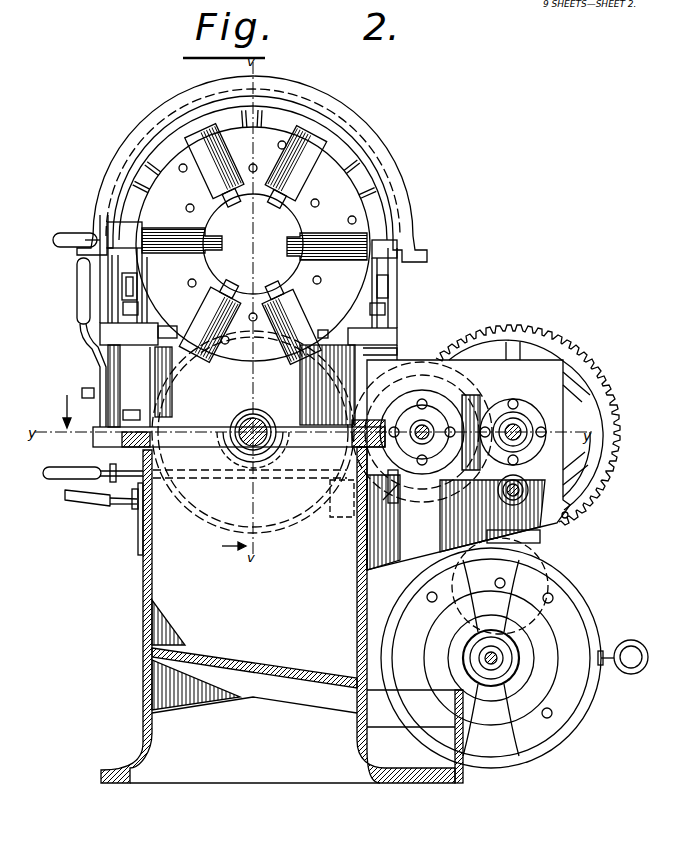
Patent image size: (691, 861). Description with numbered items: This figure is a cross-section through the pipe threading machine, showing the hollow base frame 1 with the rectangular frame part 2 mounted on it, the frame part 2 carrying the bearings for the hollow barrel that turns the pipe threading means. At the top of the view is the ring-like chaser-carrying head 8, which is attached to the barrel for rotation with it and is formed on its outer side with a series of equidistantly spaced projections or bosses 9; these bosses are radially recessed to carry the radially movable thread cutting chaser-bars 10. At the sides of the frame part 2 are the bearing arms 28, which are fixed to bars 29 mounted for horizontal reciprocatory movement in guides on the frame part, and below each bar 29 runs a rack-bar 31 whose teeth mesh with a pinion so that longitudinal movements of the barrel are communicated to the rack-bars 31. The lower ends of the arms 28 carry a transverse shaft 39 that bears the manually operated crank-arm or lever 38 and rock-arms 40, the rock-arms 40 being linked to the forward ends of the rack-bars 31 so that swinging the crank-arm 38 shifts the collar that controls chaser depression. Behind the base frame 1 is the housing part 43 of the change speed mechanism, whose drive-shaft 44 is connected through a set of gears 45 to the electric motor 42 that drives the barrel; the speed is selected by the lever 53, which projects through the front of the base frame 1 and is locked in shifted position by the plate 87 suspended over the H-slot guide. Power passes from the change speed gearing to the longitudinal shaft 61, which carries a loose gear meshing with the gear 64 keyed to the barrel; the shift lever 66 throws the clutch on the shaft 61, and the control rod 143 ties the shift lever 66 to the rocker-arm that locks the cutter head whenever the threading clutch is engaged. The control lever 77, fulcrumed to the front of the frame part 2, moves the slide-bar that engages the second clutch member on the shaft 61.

The hollow base frame 1 is at (143, 607).
The rectangular frame part 2 is at (153, 384).
The ring-like chaser-carrying head 8 is at (253, 244).
The projections or bosses 9 is at (334, 280).
The thread cutting chaser-bars 10 is at (287, 246).
The bearing arms 28 is at (137, 270).
The bars 29 is at (137, 287).
The rack-bar 31 is at (138, 305).
The crank-arm or lever 38 is at (100, 297).
The shaft 39 is at (322, 330).
The rock-arms 40 is at (141, 347).
The electric motor 42 is at (572, 619).
The housing part 43 is at (461, 465).
The drive-shaft 44 is at (518, 420).
The set of gears 45 is at (545, 535).
The lever 53 is at (120, 506).
The shaft 61 is at (230, 450).
The gear 64 is at (363, 178).
The shift lever 66 is at (93, 464).
The control lever 77 is at (84, 357).
The plate 87 is at (143, 526).
The control rod 143 is at (355, 520).